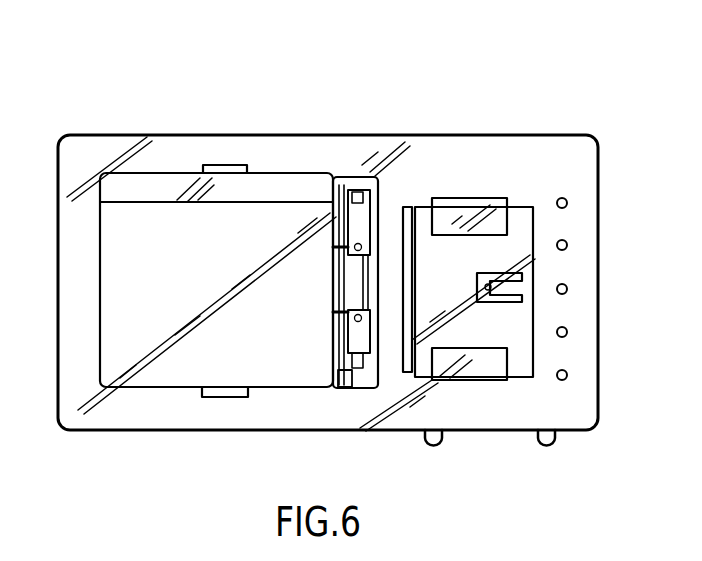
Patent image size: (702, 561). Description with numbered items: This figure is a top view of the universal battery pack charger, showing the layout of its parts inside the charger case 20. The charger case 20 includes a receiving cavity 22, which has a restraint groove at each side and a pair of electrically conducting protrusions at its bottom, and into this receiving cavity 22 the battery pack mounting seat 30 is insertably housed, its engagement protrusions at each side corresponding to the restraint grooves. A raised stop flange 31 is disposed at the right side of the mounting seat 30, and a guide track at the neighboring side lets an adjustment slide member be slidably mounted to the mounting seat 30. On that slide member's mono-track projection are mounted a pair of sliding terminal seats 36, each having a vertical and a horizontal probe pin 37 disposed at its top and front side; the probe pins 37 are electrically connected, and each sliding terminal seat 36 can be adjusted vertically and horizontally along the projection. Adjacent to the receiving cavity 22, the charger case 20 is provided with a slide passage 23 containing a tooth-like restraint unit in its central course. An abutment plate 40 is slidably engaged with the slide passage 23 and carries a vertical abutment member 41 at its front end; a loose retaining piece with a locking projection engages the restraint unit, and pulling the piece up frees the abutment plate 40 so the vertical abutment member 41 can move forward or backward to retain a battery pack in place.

The charger case 20 is at (395, 138).
The receiving cavity 22 is at (155, 172).
The slide passage 23 is at (483, 212).
The battery pack mounting seat 30 is at (275, 173).
The raised stop flange 31 is at (236, 205).
The sliding terminal seat 36 is at (378, 226).
The probe pin 37 is at (352, 244).
The abutment plate 40 is at (515, 238).
The vertical abutment member 41 is at (398, 233).